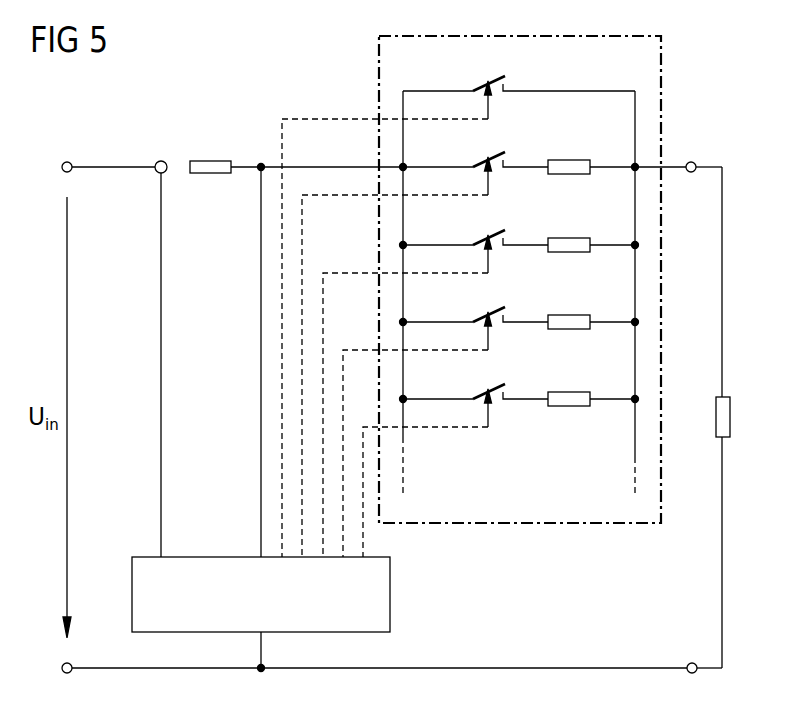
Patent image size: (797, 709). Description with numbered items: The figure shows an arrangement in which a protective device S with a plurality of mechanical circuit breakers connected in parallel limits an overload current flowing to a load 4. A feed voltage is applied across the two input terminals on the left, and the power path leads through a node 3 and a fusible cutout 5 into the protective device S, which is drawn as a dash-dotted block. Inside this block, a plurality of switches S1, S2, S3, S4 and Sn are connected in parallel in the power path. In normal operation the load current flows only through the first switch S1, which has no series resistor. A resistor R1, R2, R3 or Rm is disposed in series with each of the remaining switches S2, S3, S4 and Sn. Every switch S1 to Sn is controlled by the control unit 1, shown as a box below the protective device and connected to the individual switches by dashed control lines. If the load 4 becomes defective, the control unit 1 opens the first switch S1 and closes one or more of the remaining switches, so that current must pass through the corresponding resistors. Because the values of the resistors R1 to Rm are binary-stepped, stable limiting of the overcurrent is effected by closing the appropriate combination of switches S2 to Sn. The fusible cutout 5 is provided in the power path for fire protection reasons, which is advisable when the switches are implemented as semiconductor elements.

The control unit 1 is at (390, 595).
The input node / voltage measuring point 3 is at (162, 161).
The load 4 is at (730, 417).
The fusible cutout 5 is at (213, 161).
The protective device S is at (540, 524).
The first switch S1 is at (475, 85).
The second switch S2 is at (475, 161).
The third switch S3 is at (475, 239).
The fourth switch S4 is at (475, 316).
The n-th switch Sn is at (475, 393).
The resistor R1 is at (568, 160).
The resistor R2 is at (568, 238).
The resistor R3 is at (568, 315).
The m-th resistor Rm is at (568, 392).